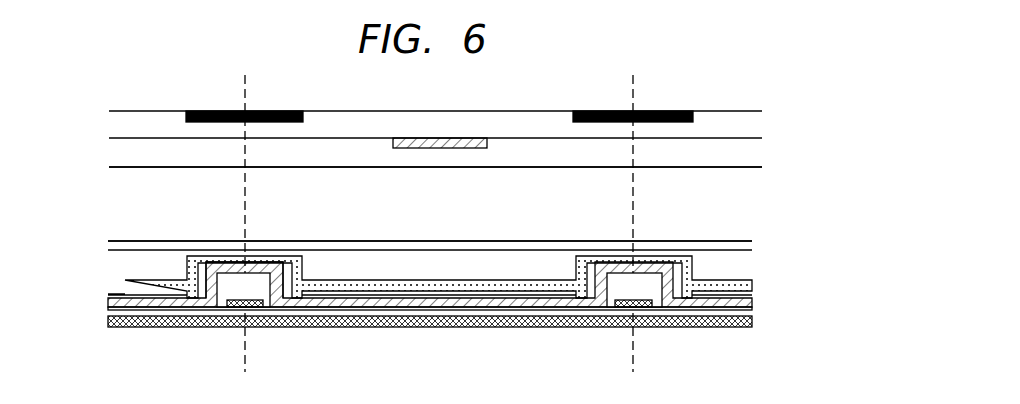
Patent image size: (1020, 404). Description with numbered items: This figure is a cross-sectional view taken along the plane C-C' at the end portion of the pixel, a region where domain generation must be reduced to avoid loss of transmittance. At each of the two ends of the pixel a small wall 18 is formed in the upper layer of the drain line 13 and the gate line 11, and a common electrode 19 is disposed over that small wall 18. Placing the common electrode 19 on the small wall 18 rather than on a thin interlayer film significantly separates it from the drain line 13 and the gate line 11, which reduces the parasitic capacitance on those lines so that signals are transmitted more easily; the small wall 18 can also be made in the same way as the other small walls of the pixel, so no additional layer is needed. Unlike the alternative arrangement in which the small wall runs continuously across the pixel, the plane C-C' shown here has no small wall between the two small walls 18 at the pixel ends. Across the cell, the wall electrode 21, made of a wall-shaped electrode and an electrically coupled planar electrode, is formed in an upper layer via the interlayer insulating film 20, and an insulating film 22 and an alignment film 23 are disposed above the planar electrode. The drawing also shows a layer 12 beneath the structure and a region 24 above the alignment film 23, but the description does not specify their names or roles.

The gate line 11 is at (470, 327).
The base insulating layer 12 is at (382, 310).
The drain line 13 is at (236, 307).
The small wall 18 is at (255, 285).
The common electrode 19 is at (212, 285).
The interlayer insulating film 20 is at (117, 297).
The wall electrode 21 is at (358, 290).
The insulating film 22 is at (125, 273).
The alignment film 23 is at (108, 246).
The liquid crystal layer 24 is at (517, 185).